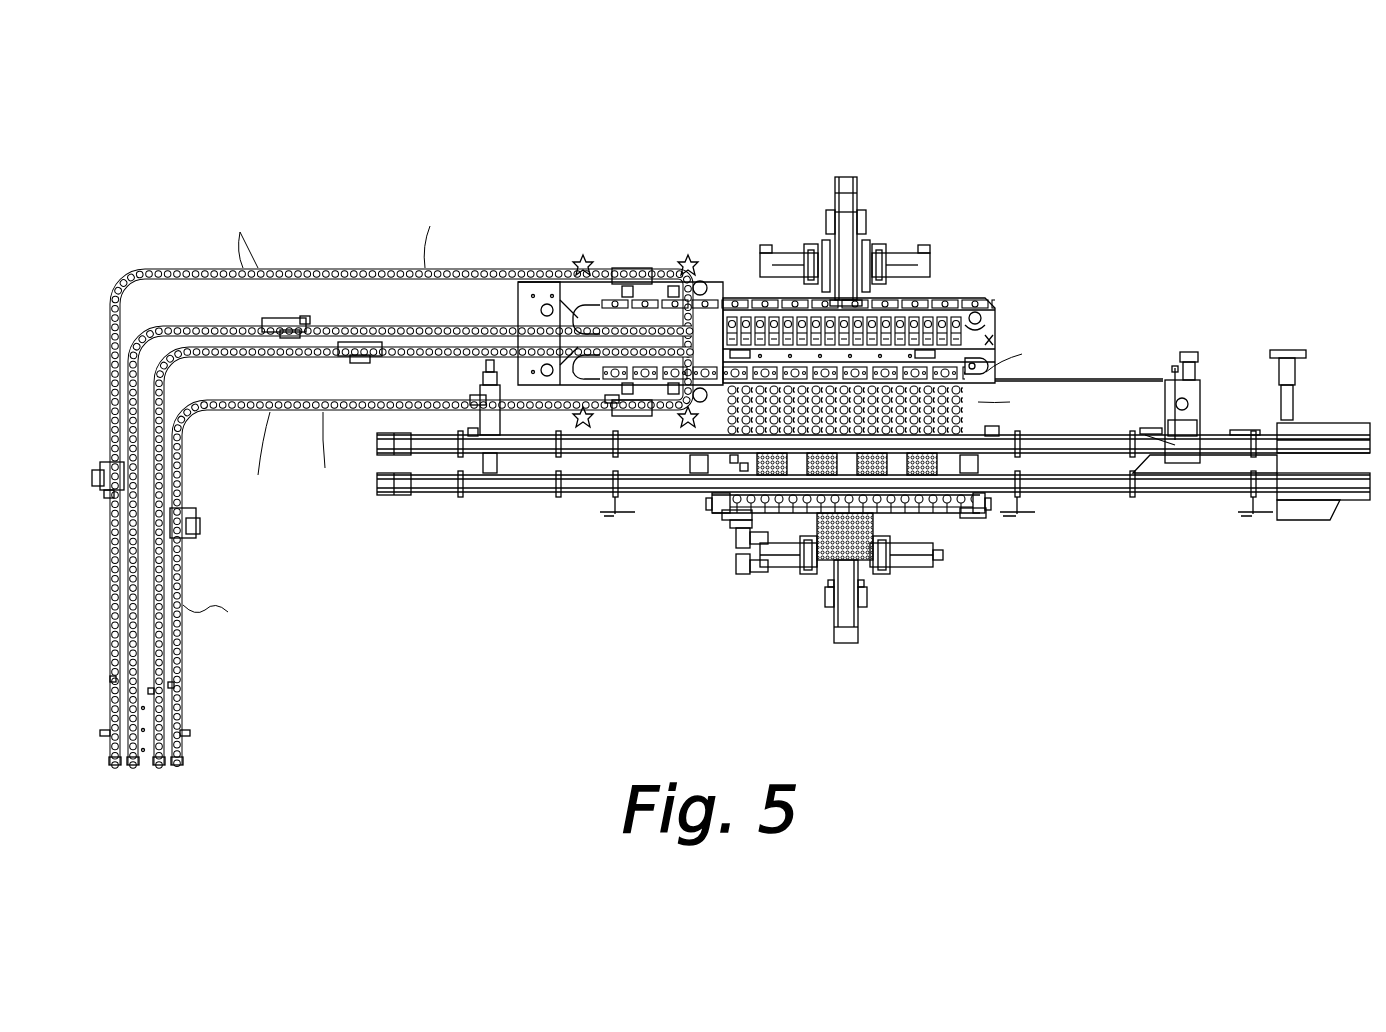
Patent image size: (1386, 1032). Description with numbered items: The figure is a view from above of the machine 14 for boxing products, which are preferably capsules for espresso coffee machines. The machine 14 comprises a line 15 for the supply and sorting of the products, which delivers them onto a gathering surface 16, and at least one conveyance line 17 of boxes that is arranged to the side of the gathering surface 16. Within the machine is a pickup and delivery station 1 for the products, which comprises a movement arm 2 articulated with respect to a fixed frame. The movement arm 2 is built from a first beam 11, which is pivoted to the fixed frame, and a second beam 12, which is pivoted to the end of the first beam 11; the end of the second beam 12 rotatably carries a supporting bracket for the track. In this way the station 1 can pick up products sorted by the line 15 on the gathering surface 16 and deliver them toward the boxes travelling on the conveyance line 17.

The pickup and delivery station 1 is at (725, 540).
The movement arm 2 is at (878, 612).
The first beam 11 is at (825, 597).
The second beam 12 is at (840, 621).
The machine for boxing products 14 is at (1146, 176).
The line for the supply and sorting of products 15 is at (347, 262).
The gathering surface 16 is at (888, 382).
The conveyance line of boxes 17 is at (1067, 471).